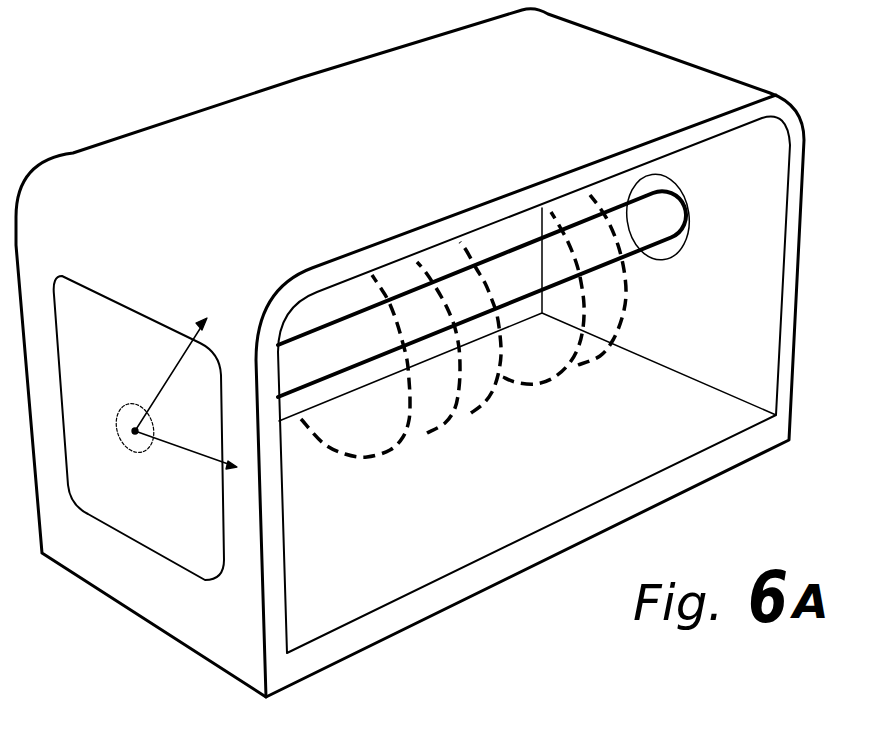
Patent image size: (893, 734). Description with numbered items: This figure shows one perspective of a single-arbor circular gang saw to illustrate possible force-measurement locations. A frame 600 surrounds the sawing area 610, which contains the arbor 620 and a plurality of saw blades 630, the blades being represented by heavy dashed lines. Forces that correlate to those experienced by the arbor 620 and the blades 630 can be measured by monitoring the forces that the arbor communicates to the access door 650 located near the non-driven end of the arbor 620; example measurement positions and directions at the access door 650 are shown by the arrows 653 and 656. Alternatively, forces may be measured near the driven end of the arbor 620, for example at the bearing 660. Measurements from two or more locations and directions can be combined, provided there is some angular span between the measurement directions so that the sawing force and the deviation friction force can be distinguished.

The frame 600 is at (332, 185).
The sawing area 610 is at (355, 537).
The arbor 620 is at (656, 212).
The saw blades 630 is at (388, 453).
The access door 650 is at (123, 495).
The measurement position and direction 653 is at (168, 376).
The measurement position and direction 656 is at (200, 455).
The bearing 660 is at (673, 258).